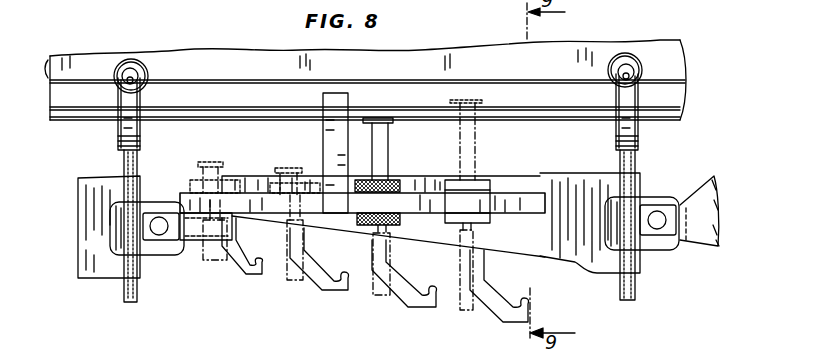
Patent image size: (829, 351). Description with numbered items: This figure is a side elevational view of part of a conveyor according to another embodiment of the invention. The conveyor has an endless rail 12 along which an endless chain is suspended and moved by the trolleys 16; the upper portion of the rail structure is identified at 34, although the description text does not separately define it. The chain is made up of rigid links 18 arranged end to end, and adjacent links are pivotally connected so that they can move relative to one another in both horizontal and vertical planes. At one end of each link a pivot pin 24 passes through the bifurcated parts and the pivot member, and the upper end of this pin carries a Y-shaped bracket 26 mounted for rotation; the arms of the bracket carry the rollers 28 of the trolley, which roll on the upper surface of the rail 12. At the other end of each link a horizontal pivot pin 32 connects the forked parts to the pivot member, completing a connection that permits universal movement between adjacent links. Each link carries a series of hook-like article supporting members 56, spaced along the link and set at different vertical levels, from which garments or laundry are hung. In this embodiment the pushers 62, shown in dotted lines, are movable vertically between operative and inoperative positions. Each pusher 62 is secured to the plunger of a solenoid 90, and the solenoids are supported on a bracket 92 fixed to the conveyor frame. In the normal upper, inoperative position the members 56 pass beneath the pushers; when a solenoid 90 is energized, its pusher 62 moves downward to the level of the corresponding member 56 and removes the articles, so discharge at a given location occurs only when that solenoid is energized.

The endless rail 12 is at (85, 118).
The trolley 16 is at (118, 129).
The rigid link 18 is at (88, 180).
The pivot pin 24 is at (125, 293).
The Y-shaped bracket 26 is at (140, 142).
The roller 28 is at (125, 58).
The horizontal pivot pin 32 is at (163, 216).
The rail 34 is at (225, 56).
The article supporting member 56 is at (244, 273).
The pusher 62 is at (207, 242).
The solenoid 90 is at (193, 182).
The bracket 92 is at (520, 192).